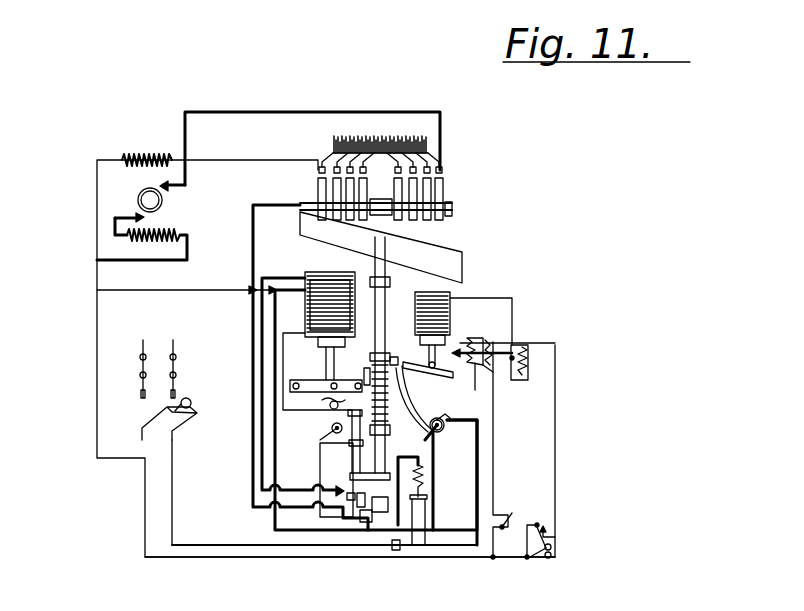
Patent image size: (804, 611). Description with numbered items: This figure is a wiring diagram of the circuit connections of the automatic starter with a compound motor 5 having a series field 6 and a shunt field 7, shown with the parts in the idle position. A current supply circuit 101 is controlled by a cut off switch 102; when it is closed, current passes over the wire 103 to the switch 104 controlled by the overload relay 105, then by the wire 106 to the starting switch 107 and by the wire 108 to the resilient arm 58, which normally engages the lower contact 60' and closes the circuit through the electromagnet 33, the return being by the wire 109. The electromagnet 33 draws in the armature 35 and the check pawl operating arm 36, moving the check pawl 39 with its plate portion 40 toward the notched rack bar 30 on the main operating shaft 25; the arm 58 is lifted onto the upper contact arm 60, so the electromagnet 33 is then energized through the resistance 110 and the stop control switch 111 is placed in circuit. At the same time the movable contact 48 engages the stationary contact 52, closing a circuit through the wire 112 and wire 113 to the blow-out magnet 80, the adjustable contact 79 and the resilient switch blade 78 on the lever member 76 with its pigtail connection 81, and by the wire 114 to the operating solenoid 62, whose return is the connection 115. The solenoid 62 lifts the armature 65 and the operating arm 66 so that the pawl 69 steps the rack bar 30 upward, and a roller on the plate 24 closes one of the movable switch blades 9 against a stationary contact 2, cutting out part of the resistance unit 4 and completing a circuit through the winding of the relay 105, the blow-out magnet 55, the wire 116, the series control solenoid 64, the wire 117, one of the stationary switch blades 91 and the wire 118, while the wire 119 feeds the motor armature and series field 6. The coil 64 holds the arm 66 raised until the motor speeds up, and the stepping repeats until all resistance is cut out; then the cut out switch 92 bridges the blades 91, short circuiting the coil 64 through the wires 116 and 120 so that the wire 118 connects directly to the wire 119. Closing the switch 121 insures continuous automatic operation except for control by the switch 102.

The stationary switch contacts 2 is at (442, 170).
The resistance unit 4 is at (375, 135).
The compound motor 5 is at (130, 197).
The series field 6 is at (170, 230).
The shunt field 7 is at (140, 157).
The movable switch blades 9 is at (443, 185).
The plate 24 is at (456, 244).
The main operating shaft 25 is at (380, 318).
The rack bar 30 is at (406, 482).
The electromagnet 33 is at (455, 300).
The armature 35 is at (429, 355).
The check pawl operating arm 36 is at (482, 366).
The check pawl 39 is at (393, 357).
The plate portion 40 is at (414, 399).
The movable switch contact 48 is at (438, 440).
The stationary contact 52 is at (449, 412).
The blow-out magnet 55 is at (438, 418).
The resilient arm 58 is at (520, 340).
The upper contact arm 60 is at (482, 334).
The lower contact arm 60' is at (499, 382).
The operating solenoid 62 is at (305, 318).
The series control solenoid 64 is at (312, 272).
The armature 65 is at (326, 353).
The operating arm 66 is at (312, 375).
The pawl 69 is at (367, 368).
The inverted L-shaped lever member 76 is at (325, 412).
The resilient switch blade 78 is at (336, 445).
The adjustable contact 79 is at (320, 436).
The blow-out magnet 80 is at (320, 447).
The flexible pigtail connection 81 is at (347, 495).
The stationary switch blades 91 is at (363, 441).
The series coil cut out switch 92 is at (370, 527).
The current supply circuit 101 is at (173, 340).
The cut off switch 102 is at (192, 405).
The wire 103 is at (396, 553).
The switch 104 is at (435, 505).
The overload relay 105 is at (425, 473).
The wire 106 is at (477, 558).
The starting switch 107 is at (540, 515).
The wire 108 is at (557, 388).
The wire 109 is at (479, 448).
The resistance 110 is at (548, 345).
The stop control switch 111 is at (514, 514).
The wire 112 is at (462, 410).
The wire 113 is at (385, 530).
The wire 114 is at (283, 402).
The connection 115 is at (203, 290).
The wire 116 is at (297, 533).
The wire 117 is at (262, 446).
The wire 118 is at (257, 258).
The wire 119 is at (287, 112).
The wire 120 is at (378, 530).
The switch 121 is at (545, 560).